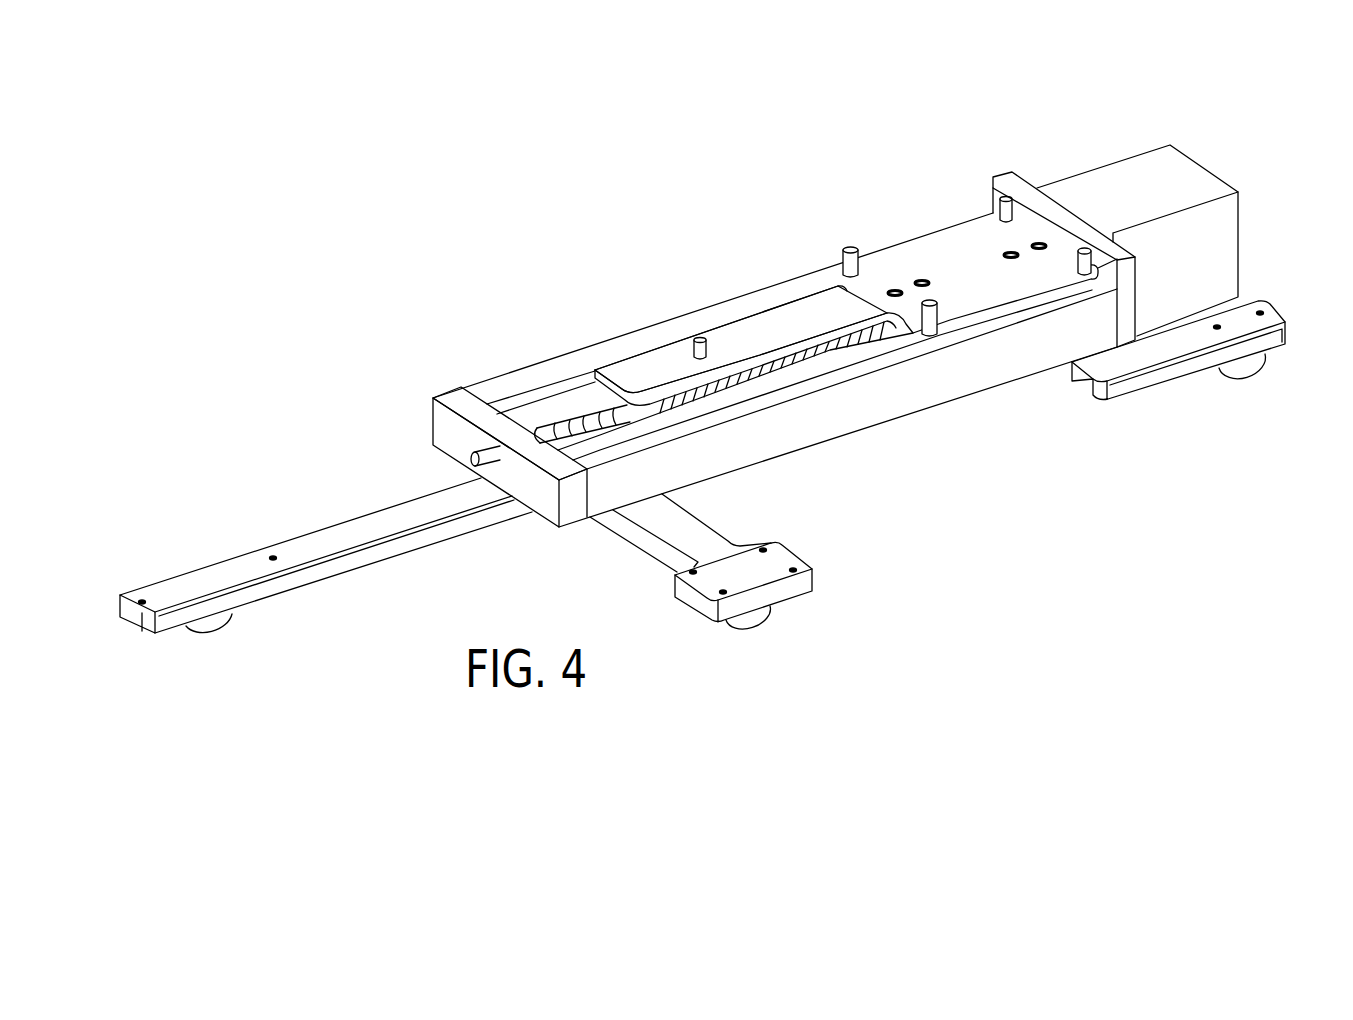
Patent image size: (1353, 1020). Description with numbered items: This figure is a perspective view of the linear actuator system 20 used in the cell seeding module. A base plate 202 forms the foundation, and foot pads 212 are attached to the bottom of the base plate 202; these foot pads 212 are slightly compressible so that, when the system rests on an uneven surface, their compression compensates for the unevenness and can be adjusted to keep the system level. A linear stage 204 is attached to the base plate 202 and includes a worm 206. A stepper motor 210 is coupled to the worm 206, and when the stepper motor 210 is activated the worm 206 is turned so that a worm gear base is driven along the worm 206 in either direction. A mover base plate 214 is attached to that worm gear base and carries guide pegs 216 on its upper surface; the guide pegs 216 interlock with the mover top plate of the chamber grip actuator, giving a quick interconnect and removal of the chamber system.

The linear actuator system 20 is at (680, 203).
The base plate 202 is at (357, 527).
The linear stage 204 is at (875, 400).
The worm 206 is at (567, 428).
The stepper motor 210 is at (1118, 173).
The foot pads 212 is at (213, 628).
The mover base plate 214 is at (800, 313).
The guide pegs 216 is at (700, 335).